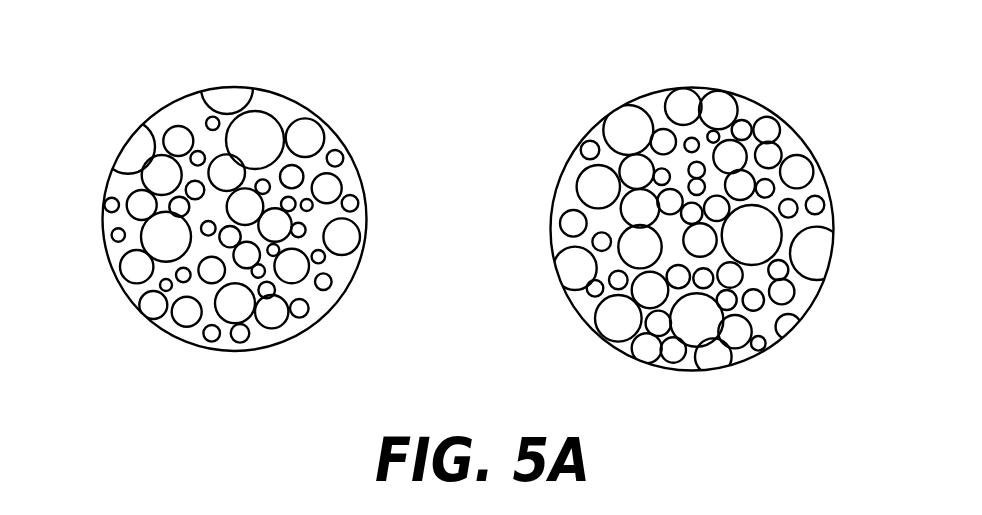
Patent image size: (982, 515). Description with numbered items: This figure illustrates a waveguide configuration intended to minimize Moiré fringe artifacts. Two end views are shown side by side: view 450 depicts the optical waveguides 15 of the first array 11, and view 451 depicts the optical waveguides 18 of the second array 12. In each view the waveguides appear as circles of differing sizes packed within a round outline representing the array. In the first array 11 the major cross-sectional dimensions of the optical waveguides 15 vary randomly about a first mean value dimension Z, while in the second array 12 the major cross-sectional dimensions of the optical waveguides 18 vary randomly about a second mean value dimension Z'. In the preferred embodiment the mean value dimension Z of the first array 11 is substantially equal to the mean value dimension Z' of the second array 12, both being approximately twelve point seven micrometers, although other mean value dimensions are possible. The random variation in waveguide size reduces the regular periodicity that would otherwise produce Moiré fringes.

The first array 11 is at (225, 88).
The second array 12 is at (700, 89).
The optical waveguide 15 is at (306, 137).
The optical waveguide 18 is at (695, 328).
The view 450 is at (96, 214).
The view 451 is at (921, 234).